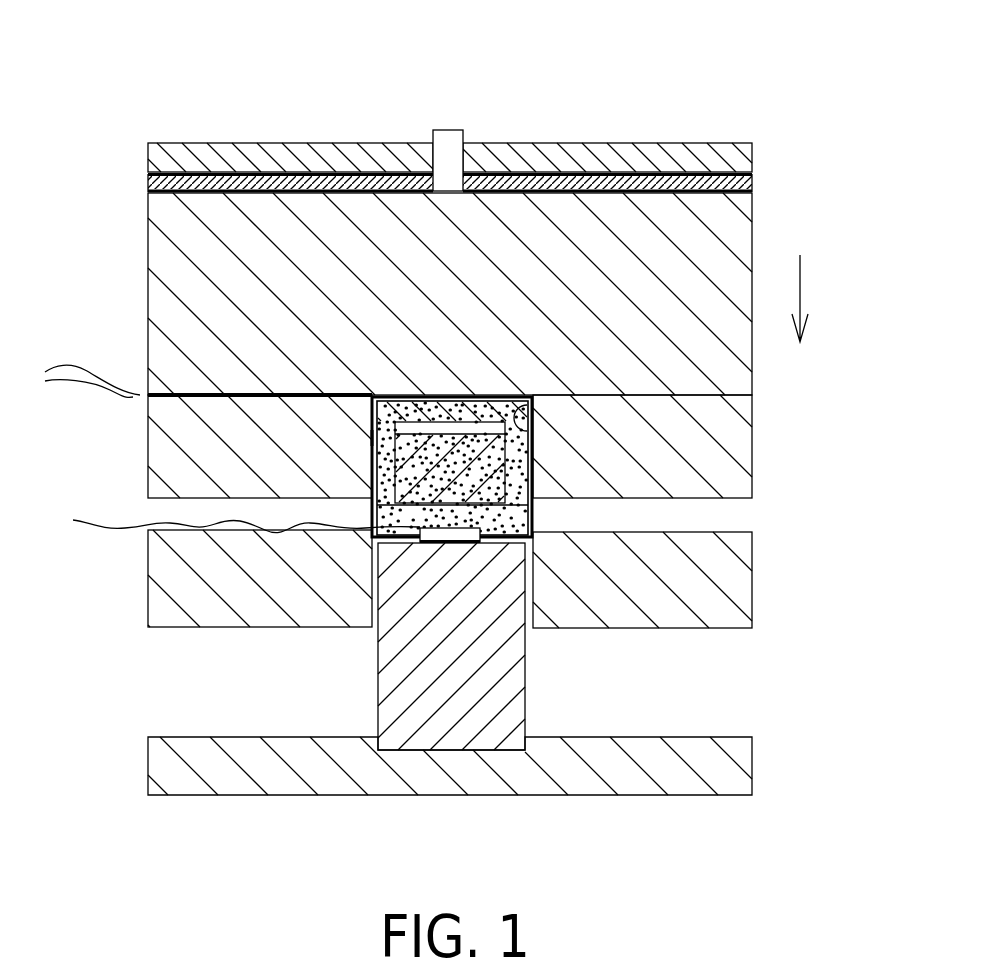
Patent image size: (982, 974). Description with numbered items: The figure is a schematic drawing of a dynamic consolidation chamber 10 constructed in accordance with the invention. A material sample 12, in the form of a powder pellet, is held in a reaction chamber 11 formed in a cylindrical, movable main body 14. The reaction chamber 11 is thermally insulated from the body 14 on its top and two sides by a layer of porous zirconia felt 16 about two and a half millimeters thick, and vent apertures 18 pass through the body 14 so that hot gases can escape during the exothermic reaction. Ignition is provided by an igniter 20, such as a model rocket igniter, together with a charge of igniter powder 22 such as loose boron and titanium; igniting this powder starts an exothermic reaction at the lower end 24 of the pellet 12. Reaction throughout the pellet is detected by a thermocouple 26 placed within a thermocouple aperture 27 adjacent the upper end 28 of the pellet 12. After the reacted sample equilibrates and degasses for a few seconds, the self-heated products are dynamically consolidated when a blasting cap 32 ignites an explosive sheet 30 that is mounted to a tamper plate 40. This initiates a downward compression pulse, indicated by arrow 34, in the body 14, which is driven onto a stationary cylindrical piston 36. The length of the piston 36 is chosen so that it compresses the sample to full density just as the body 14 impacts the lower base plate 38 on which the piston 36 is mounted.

The molding apparatus 10 is at (645, 86).
The reaction chamber 11 is at (530, 433).
The material sample 12 is at (483, 467).
The main body 14 is at (740, 222).
The porous zirconia felt 16 is at (468, 403).
The vent apertures 18 is at (170, 510).
The igniter 20 is at (443, 547).
The igniter powder 22 is at (530, 520).
The lower end 24 is at (530, 490).
The thermocouple 26 is at (73, 365).
The thermocouple aperture 27 is at (230, 398).
The upper end 28 is at (367, 438).
The explosive sheet 30 is at (752, 178).
The blasting cap 32 is at (463, 132).
The arrow 34 is at (802, 287).
The stationary cylindrical piston 36 is at (525, 650).
The lower base plate 38 is at (753, 765).
The tamper plate 40 is at (752, 145).